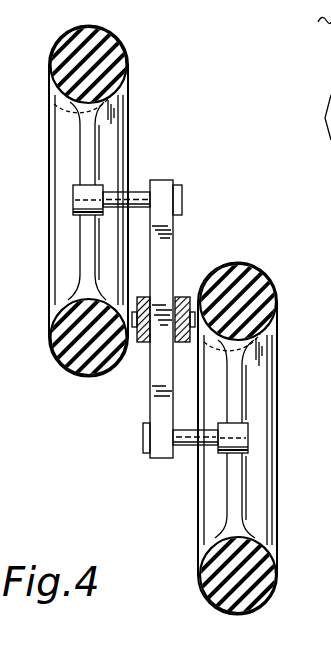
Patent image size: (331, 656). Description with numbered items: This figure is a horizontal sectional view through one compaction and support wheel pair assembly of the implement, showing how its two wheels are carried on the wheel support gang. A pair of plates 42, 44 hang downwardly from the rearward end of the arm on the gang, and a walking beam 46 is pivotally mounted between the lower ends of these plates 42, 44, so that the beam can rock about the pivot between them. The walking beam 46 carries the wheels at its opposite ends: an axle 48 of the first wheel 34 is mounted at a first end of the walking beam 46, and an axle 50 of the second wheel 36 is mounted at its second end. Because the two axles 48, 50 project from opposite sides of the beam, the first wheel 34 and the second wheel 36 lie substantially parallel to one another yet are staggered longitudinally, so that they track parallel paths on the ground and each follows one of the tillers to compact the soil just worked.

The first wheel 34 is at (277, 528).
The second wheel 36 is at (122, 127).
The plate 42 is at (142, 346).
The plate 44 is at (183, 295).
The walking beam 46 is at (162, 198).
The axle 48 is at (188, 452).
The axle 50 is at (136, 192).